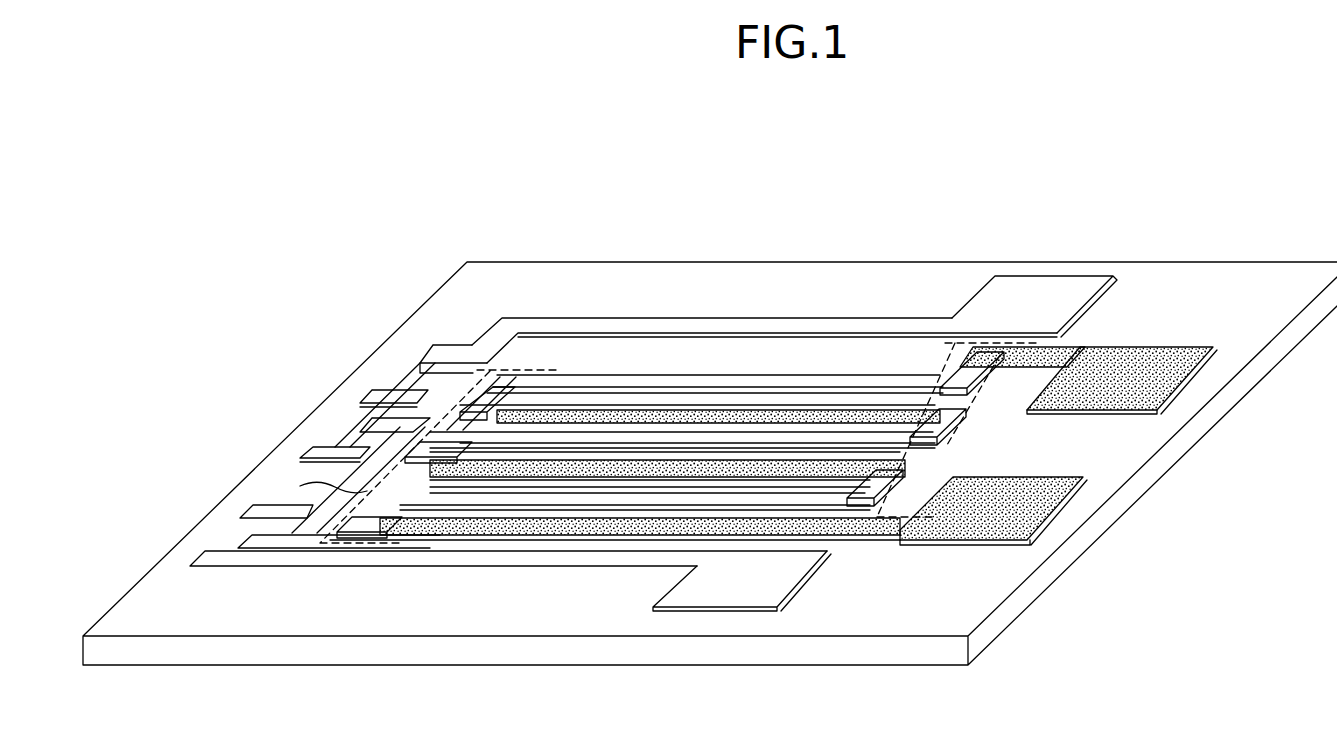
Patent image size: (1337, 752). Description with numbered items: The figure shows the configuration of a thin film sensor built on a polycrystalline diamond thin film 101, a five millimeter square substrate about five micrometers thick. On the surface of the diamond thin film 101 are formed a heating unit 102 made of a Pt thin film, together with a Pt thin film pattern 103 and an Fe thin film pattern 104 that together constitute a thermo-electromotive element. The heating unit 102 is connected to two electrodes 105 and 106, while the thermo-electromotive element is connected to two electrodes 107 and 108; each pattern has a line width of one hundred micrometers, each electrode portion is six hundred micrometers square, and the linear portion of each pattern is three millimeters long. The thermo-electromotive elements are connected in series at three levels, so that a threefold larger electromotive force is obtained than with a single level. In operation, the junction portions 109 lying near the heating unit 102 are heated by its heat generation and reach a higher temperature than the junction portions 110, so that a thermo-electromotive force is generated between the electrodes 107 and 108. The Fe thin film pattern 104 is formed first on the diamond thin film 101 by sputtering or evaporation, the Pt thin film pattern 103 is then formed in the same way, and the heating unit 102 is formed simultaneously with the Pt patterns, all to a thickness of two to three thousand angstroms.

The polycrystalline diamond thin film 101 is at (537, 652).
The heating unit 102 is at (432, 353).
The Pt thin film pattern 103 is at (645, 380).
The Fe thin film pattern 104 is at (793, 405).
The electrode of the heating unit 105 is at (1050, 292).
The electrode of the heating unit 106 is at (737, 587).
The electrode of the thermo-electromotive element 107 is at (1107, 366).
The electrode of the thermo-electromotive element 108 is at (1032, 520).
The junction portions 109 is at (305, 482).
The junction portions 110 is at (932, 443).